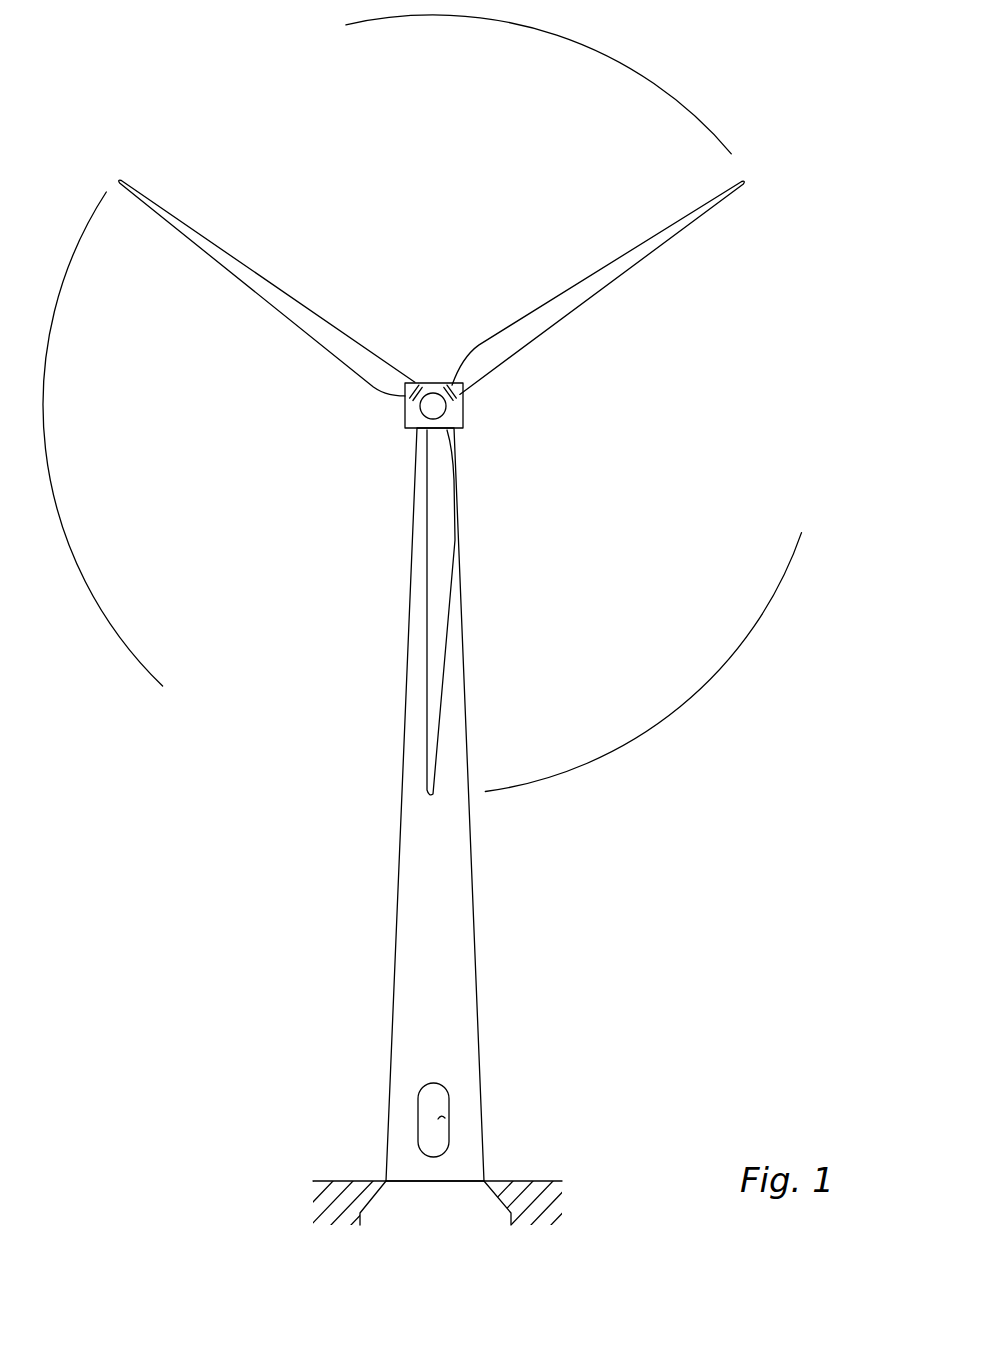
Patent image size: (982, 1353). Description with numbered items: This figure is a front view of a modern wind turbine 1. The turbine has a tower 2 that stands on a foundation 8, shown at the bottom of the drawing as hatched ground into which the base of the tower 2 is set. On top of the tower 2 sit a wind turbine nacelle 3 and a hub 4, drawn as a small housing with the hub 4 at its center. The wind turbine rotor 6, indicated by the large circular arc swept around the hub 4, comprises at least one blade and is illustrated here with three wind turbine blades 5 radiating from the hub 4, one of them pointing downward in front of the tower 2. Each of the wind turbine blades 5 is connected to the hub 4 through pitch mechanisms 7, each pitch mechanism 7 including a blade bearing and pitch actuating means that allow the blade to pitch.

The wind turbine 1 is at (422, 620).
The tower 2 is at (468, 885).
The wind turbine nacelle 3 is at (463, 428).
The hub 4 is at (432, 395).
The wind turbine blades 5 is at (437, 650).
The wind turbine rotor 6 is at (700, 650).
The pitch mechanisms 7 is at (407, 402).
The foundation 8 is at (368, 1213).